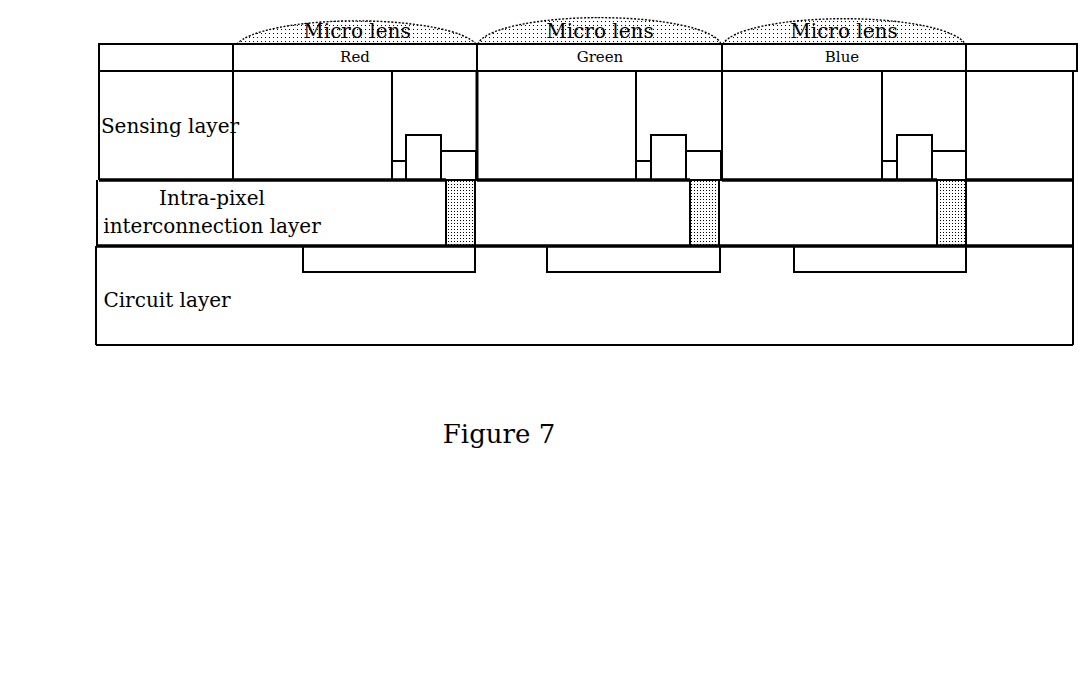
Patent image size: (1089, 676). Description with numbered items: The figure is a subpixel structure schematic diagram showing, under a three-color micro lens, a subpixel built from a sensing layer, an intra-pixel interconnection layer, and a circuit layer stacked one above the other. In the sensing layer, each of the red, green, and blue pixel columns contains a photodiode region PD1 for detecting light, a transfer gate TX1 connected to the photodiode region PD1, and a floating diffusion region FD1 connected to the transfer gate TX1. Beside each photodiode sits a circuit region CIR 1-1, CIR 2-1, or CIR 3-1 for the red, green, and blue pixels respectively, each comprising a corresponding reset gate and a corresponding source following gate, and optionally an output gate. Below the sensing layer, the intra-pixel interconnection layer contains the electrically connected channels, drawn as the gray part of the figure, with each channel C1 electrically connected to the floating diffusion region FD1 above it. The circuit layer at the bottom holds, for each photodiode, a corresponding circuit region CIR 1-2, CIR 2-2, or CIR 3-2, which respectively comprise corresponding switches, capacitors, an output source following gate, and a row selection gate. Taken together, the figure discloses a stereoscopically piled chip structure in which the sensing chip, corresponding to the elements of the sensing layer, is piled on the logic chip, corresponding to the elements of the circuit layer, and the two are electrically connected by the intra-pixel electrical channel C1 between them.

The photodiode region PD1 is at (582, 125).
The floating diffusion region FD1 is at (669, 157).
The transfer gate TX1 is at (641, 182).
The channel C1 is at (716, 213).
The circuit region CIR 1-1 is at (464, 144).
The circuit region CIR 2-1 is at (708, 144).
The circuit region CIR 3-1 is at (954, 144).
The circuit region CIR 1-2 is at (389, 259).
The circuit region CIR 2-2 is at (633, 259).
The circuit region CIR 3-2 is at (880, 259).